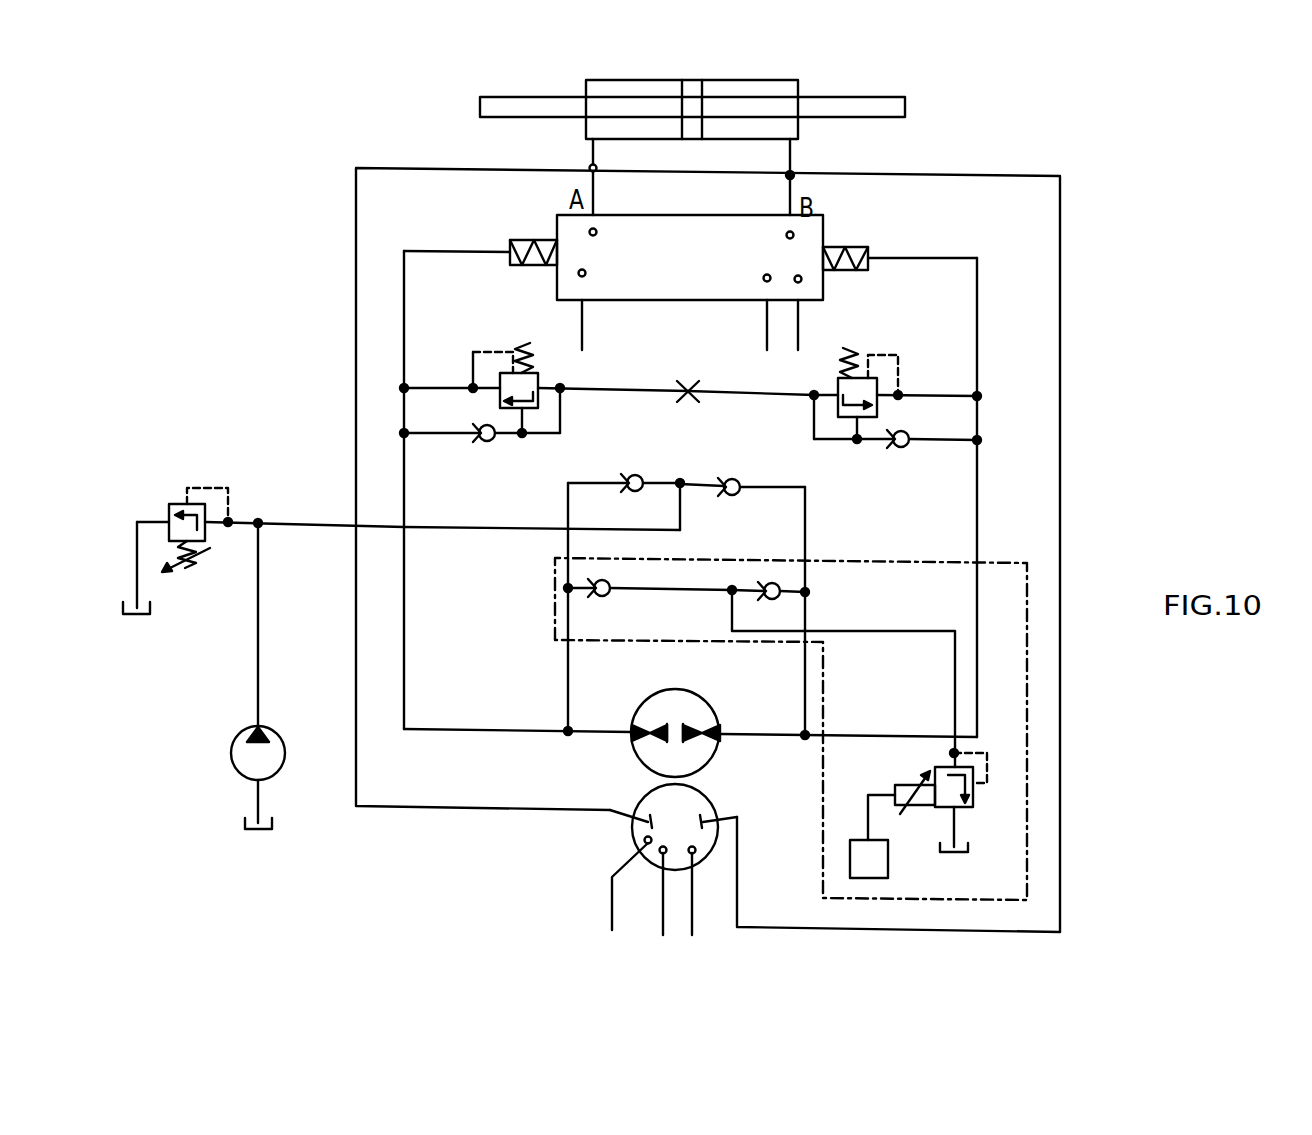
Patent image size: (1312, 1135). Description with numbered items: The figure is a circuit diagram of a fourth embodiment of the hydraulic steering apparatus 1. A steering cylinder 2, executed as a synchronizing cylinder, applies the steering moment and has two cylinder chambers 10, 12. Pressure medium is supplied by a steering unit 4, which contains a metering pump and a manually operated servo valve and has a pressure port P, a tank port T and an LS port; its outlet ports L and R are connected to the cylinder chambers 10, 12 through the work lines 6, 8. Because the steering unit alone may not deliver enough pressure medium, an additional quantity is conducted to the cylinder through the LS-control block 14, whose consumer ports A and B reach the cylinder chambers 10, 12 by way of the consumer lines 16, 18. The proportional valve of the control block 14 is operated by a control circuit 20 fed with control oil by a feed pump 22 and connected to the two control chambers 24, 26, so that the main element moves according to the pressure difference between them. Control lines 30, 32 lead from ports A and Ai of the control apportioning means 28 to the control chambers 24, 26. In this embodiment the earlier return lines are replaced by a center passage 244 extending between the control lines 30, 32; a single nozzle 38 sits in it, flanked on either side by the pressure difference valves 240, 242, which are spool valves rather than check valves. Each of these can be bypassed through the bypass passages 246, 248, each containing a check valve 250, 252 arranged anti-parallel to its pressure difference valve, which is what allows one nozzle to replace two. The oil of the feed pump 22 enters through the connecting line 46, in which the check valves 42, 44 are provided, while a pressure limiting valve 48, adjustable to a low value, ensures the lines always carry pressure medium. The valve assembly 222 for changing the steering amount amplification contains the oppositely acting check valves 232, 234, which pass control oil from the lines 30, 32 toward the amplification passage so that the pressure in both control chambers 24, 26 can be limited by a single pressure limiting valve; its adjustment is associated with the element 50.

The steering apparatus 1 is at (1106, 166).
The steering cylinder 2 is at (665, 140).
The steering unit 4 is at (706, 840).
The work line 6 is at (356, 352).
The work line 8 is at (742, 550).
The cylinder chamber 10 is at (586, 132).
The cylinder chamber 12 is at (797, 138).
The LS-control block 14 is at (684, 270).
The consumer line 16 is at (596, 188).
The consumer line 18 is at (788, 195).
The control circuit 20 is at (994, 417).
The feed pump 22 is at (283, 676).
The control chamber 24 is at (521, 267).
The control chamber 26 is at (851, 272).
The control apportioning means 28 is at (684, 706).
The control line 30 is at (480, 728).
The control line 32 is at (890, 735).
The nozzle 38 is at (688, 381).
The check valve 42 is at (612, 495).
The check valve 44 is at (735, 497).
The connecting line 46 is at (660, 488).
The pressure limiting valve 48 is at (181, 502).
The control unit 50 is at (870, 859).
The valve assembly 222 is at (1023, 778).
The check valve 232 is at (590, 594).
The check valve 234 is at (783, 597).
The pressure difference valve 240 is at (503, 370).
The pressure difference valve 242 is at (867, 385).
The center passage 244 is at (961, 378).
The bypass passage 246 is at (510, 438).
The bypass passage 248 is at (953, 444).
The check valve 250 is at (480, 427).
The check valve 252 is at (907, 448).